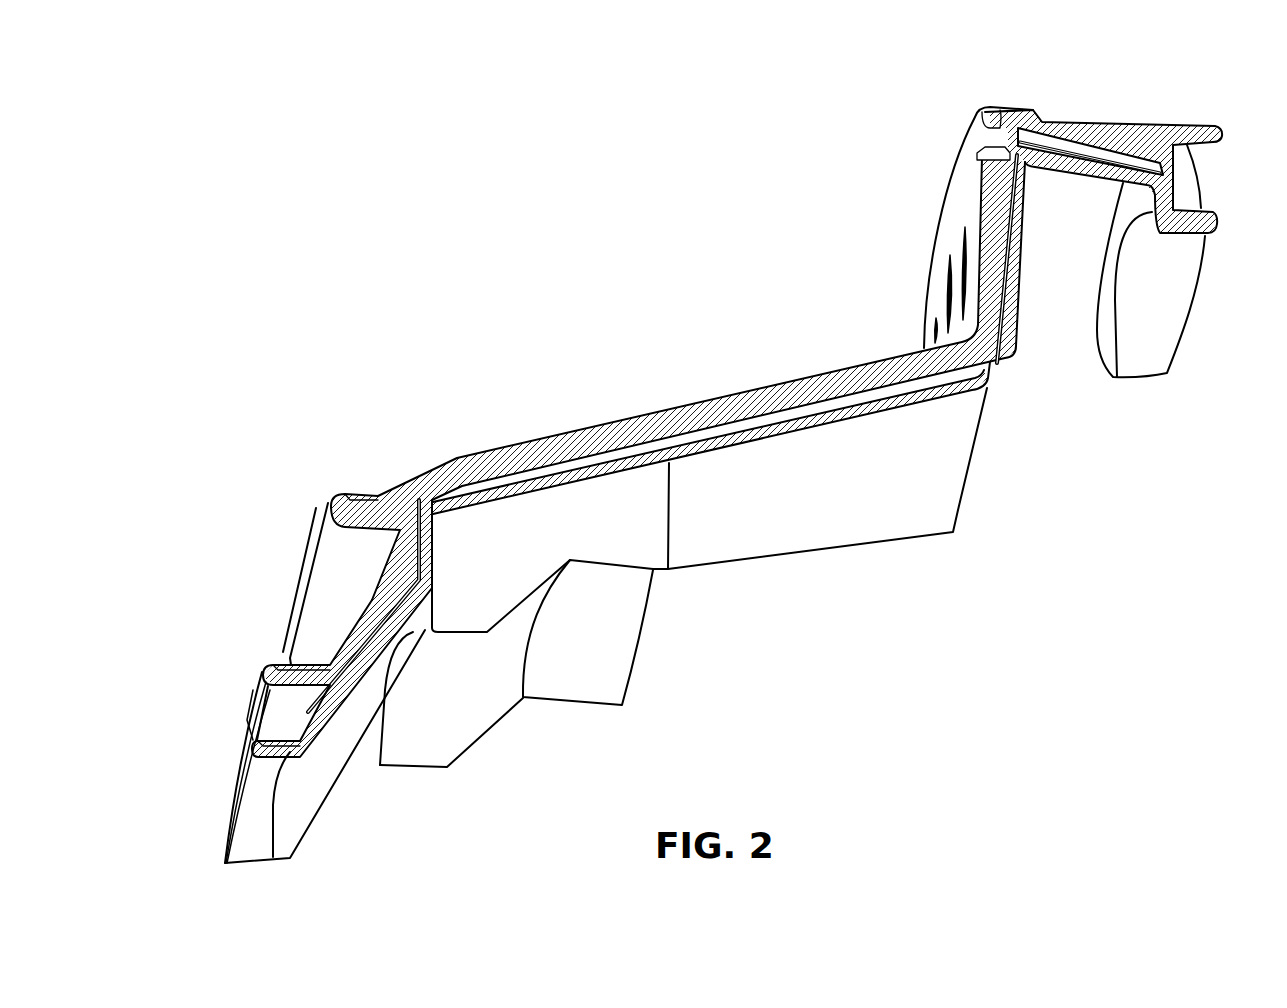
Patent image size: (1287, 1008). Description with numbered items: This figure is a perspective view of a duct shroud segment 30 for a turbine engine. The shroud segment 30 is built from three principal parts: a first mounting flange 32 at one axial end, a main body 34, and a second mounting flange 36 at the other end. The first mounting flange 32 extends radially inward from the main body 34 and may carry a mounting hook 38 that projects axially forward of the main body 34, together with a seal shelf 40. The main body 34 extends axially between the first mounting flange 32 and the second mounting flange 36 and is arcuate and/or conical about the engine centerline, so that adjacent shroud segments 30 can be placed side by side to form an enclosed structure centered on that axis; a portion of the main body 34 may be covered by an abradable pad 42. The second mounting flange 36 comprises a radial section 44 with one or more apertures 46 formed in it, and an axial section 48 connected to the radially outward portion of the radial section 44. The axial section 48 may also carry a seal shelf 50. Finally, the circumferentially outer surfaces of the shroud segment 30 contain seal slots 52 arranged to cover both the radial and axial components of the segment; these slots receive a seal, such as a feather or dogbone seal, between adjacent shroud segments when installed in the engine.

The duct shroud segment 30 is at (706, 205).
The first mounting flange 32 is at (295, 830).
The main body 34 is at (598, 690).
The second mounting flange 36 is at (1088, 117).
The mounting hook 38 is at (330, 496).
The seal shelf 40 is at (260, 718).
The abradable pad 42 is at (433, 762).
The radial section 44 is at (937, 240).
The apertures 46 is at (950, 300).
The axial section 48 is at (1163, 130).
The seal shelf 50 is at (1197, 170).
The seal slots 52 is at (456, 505).